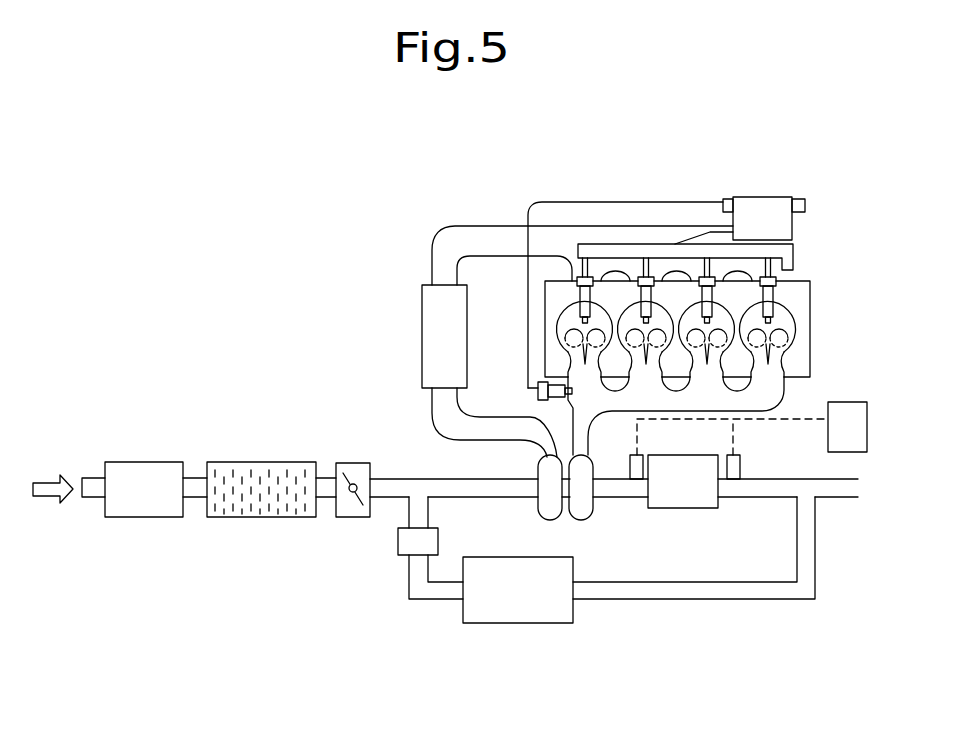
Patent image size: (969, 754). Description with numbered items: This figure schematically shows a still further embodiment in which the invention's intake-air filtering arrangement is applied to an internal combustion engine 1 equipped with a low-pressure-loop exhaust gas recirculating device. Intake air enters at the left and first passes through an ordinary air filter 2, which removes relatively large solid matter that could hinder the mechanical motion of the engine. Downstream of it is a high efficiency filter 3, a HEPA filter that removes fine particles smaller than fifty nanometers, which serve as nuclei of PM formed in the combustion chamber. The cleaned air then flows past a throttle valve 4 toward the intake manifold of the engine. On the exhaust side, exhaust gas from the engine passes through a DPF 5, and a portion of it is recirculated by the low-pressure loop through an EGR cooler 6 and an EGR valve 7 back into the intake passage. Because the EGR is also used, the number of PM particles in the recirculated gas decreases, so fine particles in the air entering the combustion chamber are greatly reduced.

The internal combustion engine 1 is at (812, 323).
The ordinary air filter 2 is at (137, 462).
The high efficiency filter 3 is at (263, 517).
The throttle valve 4 is at (357, 462).
The DPF 5 is at (687, 508).
The EGR cooler 6 is at (520, 624).
The EGR valve 7 is at (398, 543).